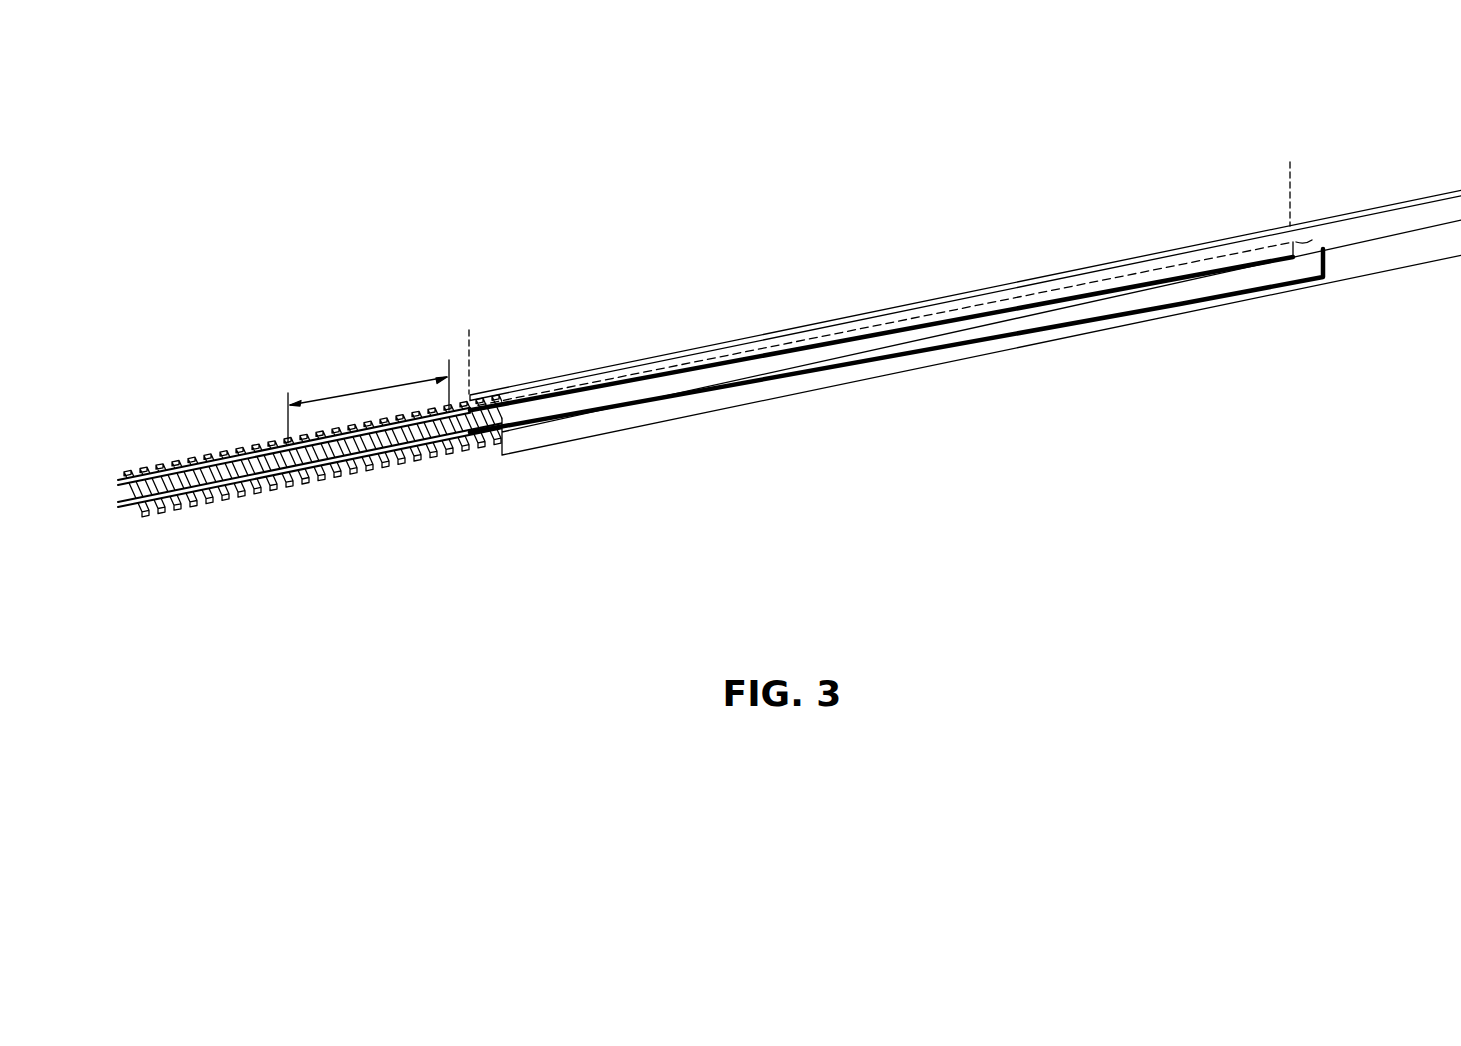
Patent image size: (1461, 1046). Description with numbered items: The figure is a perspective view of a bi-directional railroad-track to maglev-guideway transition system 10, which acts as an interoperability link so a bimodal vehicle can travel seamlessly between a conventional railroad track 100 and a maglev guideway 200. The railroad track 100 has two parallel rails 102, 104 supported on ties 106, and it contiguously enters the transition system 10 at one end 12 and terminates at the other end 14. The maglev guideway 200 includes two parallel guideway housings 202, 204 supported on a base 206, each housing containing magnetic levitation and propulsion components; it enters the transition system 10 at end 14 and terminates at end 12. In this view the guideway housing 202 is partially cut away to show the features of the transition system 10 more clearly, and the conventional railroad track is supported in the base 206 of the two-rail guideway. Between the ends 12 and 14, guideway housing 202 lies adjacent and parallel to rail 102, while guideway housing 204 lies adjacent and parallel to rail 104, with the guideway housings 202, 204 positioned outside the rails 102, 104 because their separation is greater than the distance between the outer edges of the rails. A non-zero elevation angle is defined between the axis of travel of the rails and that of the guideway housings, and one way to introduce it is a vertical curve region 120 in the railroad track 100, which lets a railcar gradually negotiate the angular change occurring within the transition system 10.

The transition system 10 is at (902, 285).
The end 12 is at (467, 342).
The end 14 is at (1287, 198).
The railroad track 100 is at (317, 530).
The rail 102 is at (163, 512).
The rail 104 is at (178, 468).
The ties 106 is at (503, 492).
The vertical curve region 120 is at (456, 452).
The maglev guideway 200 is at (965, 264).
The guideway housing 202 is at (1400, 232).
The guideway housing 204 is at (1335, 220).
The base 206 is at (1302, 265).